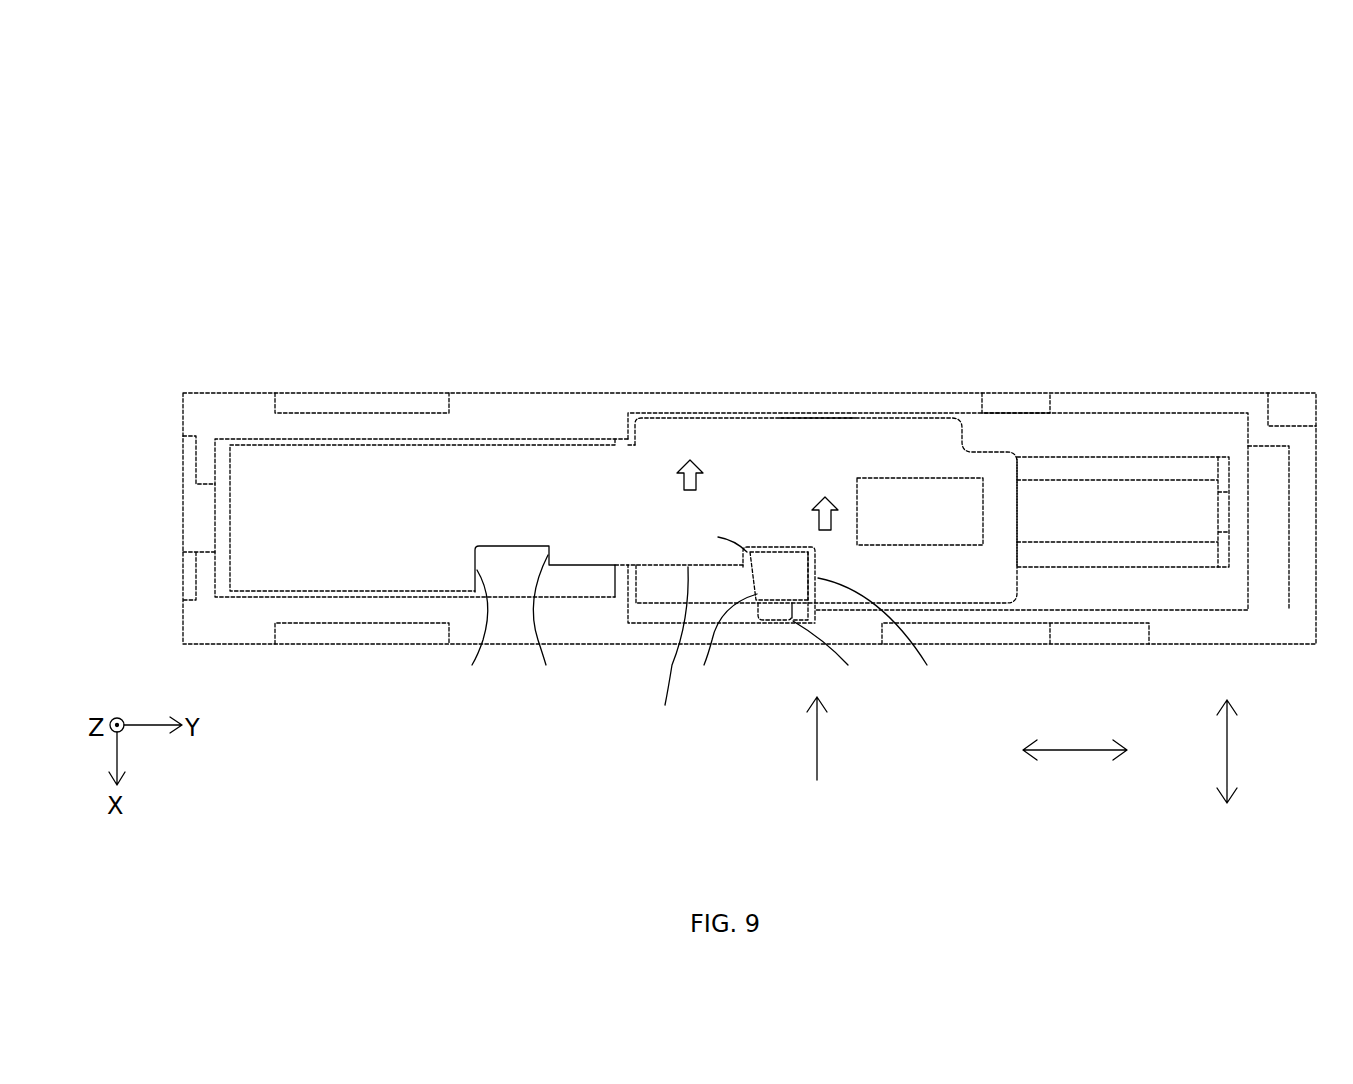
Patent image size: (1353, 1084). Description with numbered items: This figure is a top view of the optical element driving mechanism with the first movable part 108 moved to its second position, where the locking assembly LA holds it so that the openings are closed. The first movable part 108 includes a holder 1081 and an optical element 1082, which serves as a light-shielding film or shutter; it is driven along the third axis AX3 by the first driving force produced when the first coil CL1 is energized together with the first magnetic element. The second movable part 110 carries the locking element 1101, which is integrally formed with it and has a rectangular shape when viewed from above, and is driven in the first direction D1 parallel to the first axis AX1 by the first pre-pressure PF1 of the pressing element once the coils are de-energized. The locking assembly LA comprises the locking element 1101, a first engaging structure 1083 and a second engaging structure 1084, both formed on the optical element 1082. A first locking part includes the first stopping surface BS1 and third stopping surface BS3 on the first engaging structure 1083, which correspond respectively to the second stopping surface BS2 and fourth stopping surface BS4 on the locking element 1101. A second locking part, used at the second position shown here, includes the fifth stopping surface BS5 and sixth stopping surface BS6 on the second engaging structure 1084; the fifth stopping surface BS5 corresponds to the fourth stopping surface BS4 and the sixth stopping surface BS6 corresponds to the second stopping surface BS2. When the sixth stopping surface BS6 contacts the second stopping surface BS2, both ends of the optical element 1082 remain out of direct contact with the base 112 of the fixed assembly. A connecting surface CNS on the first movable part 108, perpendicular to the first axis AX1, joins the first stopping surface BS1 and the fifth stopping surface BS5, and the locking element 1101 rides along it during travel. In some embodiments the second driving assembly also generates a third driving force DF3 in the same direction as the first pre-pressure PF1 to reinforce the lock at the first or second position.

The base 112 is at (543, 413).
The first movable part 108 is at (955, 338).
The optical element 1082 is at (807, 437).
The holder 1081 is at (920, 495).
The first coil CL1 is at (1141, 497).
The second movable part 110 is at (653, 588).
The first engaging structure 1083 is at (513, 544).
The second engaging structure 1084 is at (775, 544).
The locking element 1101 is at (782, 590).
The first stopping surface BS1 is at (542, 629).
The second stopping surface BS2 is at (882, 640).
The third stopping surface BS3 is at (468, 636).
The fourth stopping surface BS4 is at (720, 648).
The fifth stopping surface BS5 is at (704, 540).
The sixth stopping surface BS6 is at (833, 662).
The connecting surface CNS is at (662, 654).
The third driving force DF3 is at (686, 461).
The first pre-pressure PF1 is at (822, 500).
The first direction D1 is at (815, 754).
The first axis AX1 is at (1221, 739).
The third axis AX3 is at (1100, 752).
The locking assembly LA is at (252, 64).